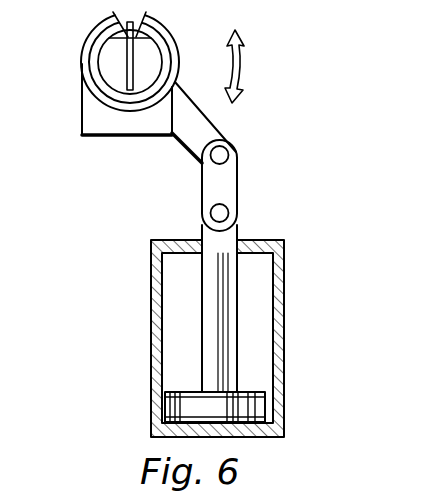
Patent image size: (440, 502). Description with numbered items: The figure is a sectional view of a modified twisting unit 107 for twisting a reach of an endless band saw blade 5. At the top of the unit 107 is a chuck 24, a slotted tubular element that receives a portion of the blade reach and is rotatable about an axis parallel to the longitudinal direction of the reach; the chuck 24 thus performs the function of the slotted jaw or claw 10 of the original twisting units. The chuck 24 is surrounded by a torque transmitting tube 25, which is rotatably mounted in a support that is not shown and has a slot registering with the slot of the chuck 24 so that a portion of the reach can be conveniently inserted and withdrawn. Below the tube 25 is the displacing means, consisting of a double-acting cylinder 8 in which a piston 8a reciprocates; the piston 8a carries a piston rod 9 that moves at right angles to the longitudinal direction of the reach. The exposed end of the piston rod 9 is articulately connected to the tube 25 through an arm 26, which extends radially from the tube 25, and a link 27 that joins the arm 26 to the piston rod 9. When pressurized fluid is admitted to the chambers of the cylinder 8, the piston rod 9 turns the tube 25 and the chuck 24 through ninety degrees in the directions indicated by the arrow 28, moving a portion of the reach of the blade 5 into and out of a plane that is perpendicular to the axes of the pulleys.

The band saw blade 5 is at (133, 68).
The cylinder 8 is at (153, 358).
The piston 8a is at (255, 412).
The piston rod 9 is at (205, 302).
The jaw or claw 10 is at (108, 55).
The chuck 24 is at (100, 85).
The torque transmitting tube 25 is at (105, 102).
The arm 26 is at (193, 142).
The link 27 is at (224, 186).
The arrow 28 is at (242, 58).
The twisting unit 107 is at (86, 147).